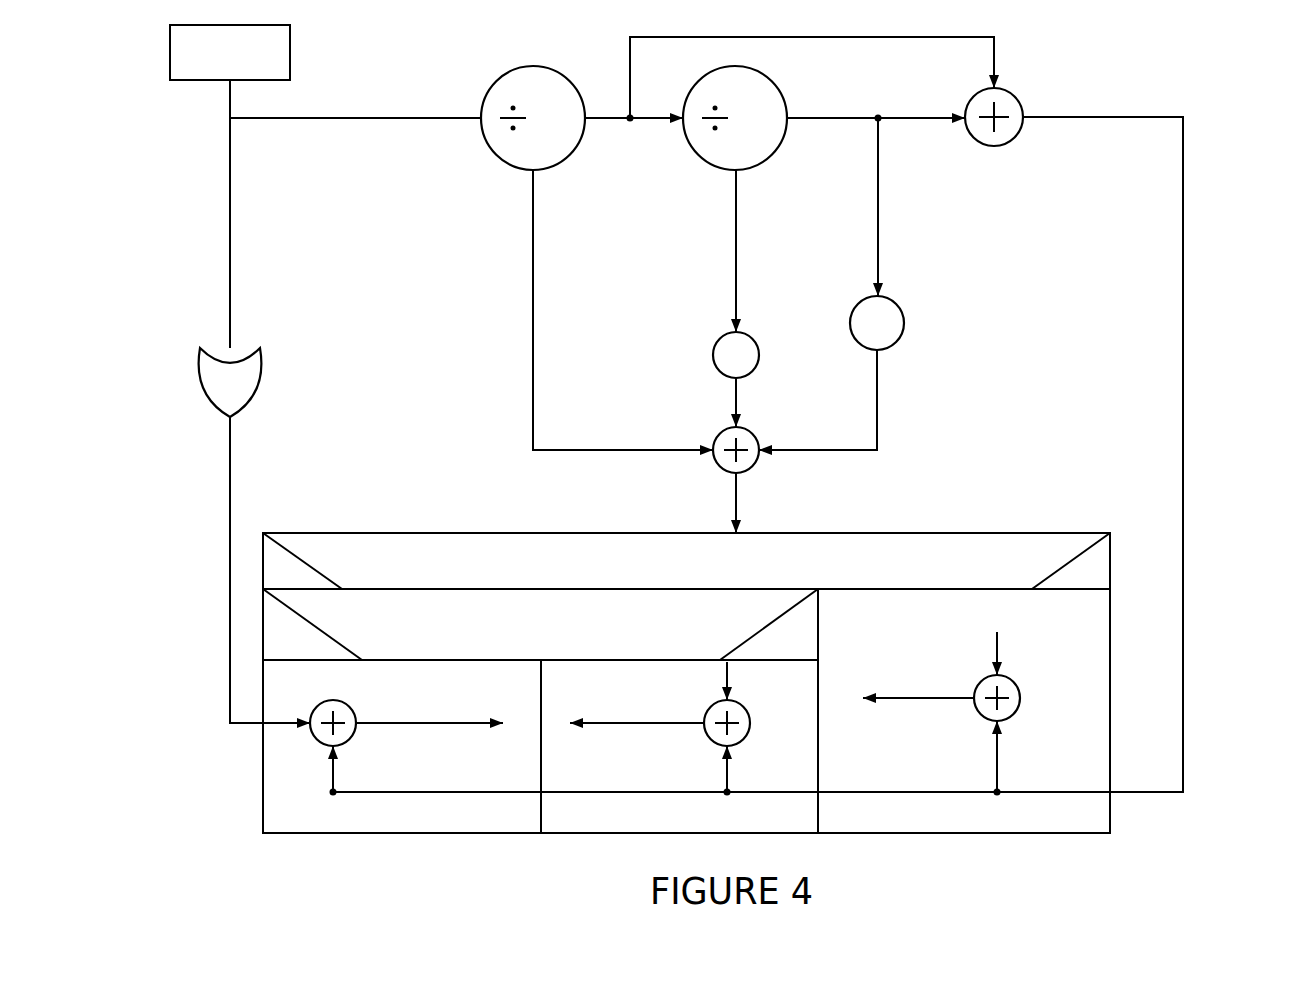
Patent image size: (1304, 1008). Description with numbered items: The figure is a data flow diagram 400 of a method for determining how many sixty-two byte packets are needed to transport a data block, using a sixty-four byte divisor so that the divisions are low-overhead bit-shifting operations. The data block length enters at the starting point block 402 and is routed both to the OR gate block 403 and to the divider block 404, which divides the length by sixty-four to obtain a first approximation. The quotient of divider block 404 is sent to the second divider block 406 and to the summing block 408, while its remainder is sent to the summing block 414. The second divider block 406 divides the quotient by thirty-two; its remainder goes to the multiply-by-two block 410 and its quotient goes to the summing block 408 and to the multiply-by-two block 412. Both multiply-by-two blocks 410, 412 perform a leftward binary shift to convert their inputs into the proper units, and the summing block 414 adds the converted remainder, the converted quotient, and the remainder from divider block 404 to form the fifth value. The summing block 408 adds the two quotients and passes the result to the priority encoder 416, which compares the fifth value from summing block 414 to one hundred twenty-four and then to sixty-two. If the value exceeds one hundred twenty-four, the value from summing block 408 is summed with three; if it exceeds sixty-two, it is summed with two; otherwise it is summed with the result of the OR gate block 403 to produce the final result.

The data flow diagram 400 is at (1291, 54).
The starting point block 402 is at (290, 58).
The OR gate block 403 is at (262, 380).
The divider block 404 is at (535, 66).
The second divider block 406 is at (695, 151).
The summing block 408 is at (989, 146).
The multiply-by-two block 410 is at (716, 346).
The multiply-by-two block 412 is at (902, 308).
The summing block 414 is at (752, 434).
The priority encoder 416 is at (1012, 533).